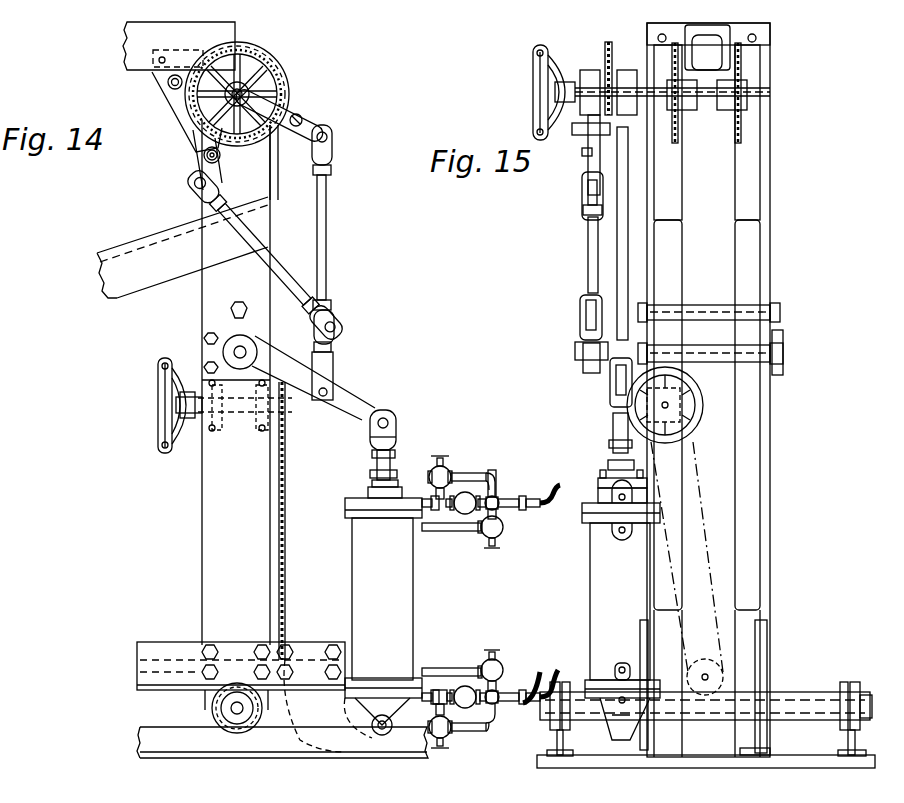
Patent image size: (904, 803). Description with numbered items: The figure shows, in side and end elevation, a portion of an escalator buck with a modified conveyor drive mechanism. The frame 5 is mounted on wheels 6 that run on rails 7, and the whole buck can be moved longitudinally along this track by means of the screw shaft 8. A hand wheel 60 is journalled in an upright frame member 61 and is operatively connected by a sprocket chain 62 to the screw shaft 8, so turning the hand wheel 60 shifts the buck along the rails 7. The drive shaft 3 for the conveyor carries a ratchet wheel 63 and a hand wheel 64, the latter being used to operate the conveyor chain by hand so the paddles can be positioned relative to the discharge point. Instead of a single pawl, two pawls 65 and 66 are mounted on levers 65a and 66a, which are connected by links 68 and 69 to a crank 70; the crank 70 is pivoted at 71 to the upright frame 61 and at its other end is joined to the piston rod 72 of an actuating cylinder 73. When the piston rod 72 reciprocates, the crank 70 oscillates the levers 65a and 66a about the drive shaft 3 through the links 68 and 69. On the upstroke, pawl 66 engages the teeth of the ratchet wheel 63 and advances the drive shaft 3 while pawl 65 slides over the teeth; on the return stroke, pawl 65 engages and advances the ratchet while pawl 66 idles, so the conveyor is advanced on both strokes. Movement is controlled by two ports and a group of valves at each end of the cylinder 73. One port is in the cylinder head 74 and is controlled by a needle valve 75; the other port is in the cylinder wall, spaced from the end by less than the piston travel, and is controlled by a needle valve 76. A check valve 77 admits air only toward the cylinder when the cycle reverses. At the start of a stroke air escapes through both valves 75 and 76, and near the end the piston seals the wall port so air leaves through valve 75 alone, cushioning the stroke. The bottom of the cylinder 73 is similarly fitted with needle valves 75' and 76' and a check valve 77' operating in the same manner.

In FIG. 14, the drive shaft 3 is at (272, 72).
In FIG. 14, the frame 5 is at (160, 662).
In FIG. 15, the frame 5 is at (780, 665).
In FIG. 14, the wheels 6 is at (210, 712).
In FIG. 15, the wheels 6 is at (852, 685).
In FIG. 14, the rails 7 is at (140, 730).
In FIG. 15, the rails 7 is at (848, 748).
In FIG. 14, the screw shaft 8 is at (150, 660).
In FIG. 15, the screw shaft 8 is at (737, 650).
In FIG. 14, the hand wheel 60 is at (158, 372).
In FIG. 15, the hand wheel 60 is at (705, 440).
In FIG. 14, the upright frame member 61 is at (202, 487).
In FIG. 15, the upright frame member 61 is at (713, 262).
In FIG. 14, the sprocket chain 62 is at (290, 477).
In FIG. 15, the sprocket chain 62 is at (705, 560).
In FIG. 14, the ratchet wheel 63 is at (253, 62).
In FIG. 15, the ratchet wheel 63 is at (603, 50).
In FIG. 14, the hand wheel 64 is at (285, 95).
In FIG. 15, the hand wheel 64 is at (533, 92).
In FIG. 14, the pawl 65 is at (280, 140).
In FIG. 14, the lever 65a is at (310, 120).
In FIG. 15, the lever 65a is at (588, 152).
In FIG. 14, the pawl 66 is at (190, 141).
In FIG. 14, the lever 66a is at (198, 155).
In FIG. 14, the link 68 is at (325, 220).
In FIG. 15, the link 68 is at (618, 247).
In FIG. 14, the link 69 is at (255, 262).
In FIG. 15, the link 69 is at (585, 225).
In FIG. 14, the crank 70 is at (340, 395).
In FIG. 14, the pivot 71 is at (232, 352).
In FIG. 14, the piston rod 72 is at (395, 432).
In FIG. 15, the piston rod 72 is at (613, 448).
In FIG. 14, the actuating cylinder 73 is at (403, 617).
In FIG. 15, the actuating cylinder 73 is at (600, 577).
In FIG. 14, the cylinder head 74 is at (403, 498).
In FIG. 14, the needle valve 75 is at (469, 460).
In FIG. 14, the needle valve 76 is at (487, 534).
In FIG. 14, the check valve 77 is at (454, 526).
In FIG. 14, the needle valve 75' is at (462, 732).
In FIG. 14, the needle valve 76' is at (493, 663).
In FIG. 14, the check valve 77' is at (490, 658).